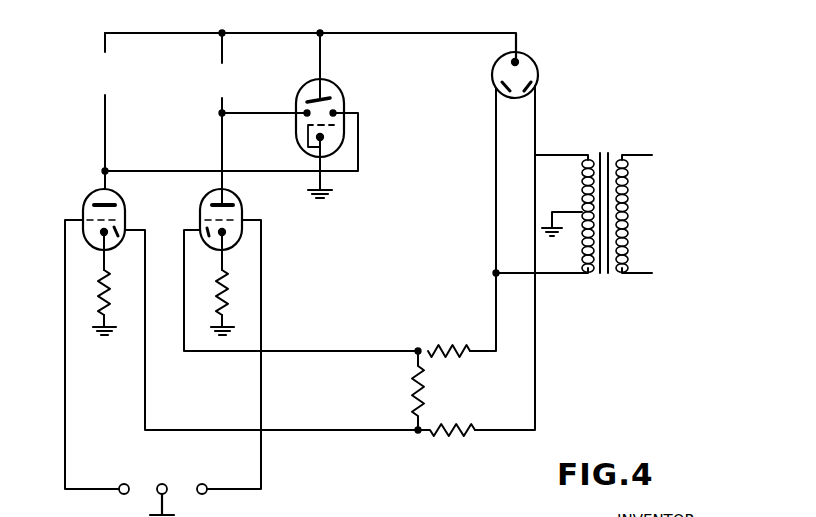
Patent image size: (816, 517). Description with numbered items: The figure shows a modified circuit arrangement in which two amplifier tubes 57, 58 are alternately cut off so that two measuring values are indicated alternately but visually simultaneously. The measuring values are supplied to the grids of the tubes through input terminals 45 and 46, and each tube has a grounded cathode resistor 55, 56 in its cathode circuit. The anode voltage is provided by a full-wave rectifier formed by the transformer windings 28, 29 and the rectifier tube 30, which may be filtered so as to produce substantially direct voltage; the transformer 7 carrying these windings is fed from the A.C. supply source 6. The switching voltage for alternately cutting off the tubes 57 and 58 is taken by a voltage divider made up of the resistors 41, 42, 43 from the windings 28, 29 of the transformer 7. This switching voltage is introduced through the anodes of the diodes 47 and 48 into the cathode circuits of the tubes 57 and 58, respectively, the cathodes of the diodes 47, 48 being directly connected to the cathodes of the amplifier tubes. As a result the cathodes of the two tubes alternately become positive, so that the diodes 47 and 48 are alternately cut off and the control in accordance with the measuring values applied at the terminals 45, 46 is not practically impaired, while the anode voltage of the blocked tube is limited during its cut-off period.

The full-wave rectifier tube 30 is at (526, 74).
The transformer 7 is at (605, 204).
The transformer winding 28 is at (574, 216).
The transformer winding 29 is at (562, 236).
The A.C. supply source 6 is at (634, 214).
The amplifier tube 57 is at (99, 210).
The diode 47 is at (112, 236).
The grounded cathode resistor 55 is at (118, 292).
The amplifier tube 58 is at (256, 210).
The diode 48 is at (208, 236).
The grounded cathode resistor 56 is at (212, 292).
The voltage divider resistor 41 is at (449, 343).
The voltage divider resistor 42 is at (431, 390).
The voltage divider resistor 43 is at (446, 443).
The input terminal 45 is at (124, 500).
The input terminal 46 is at (203, 500).